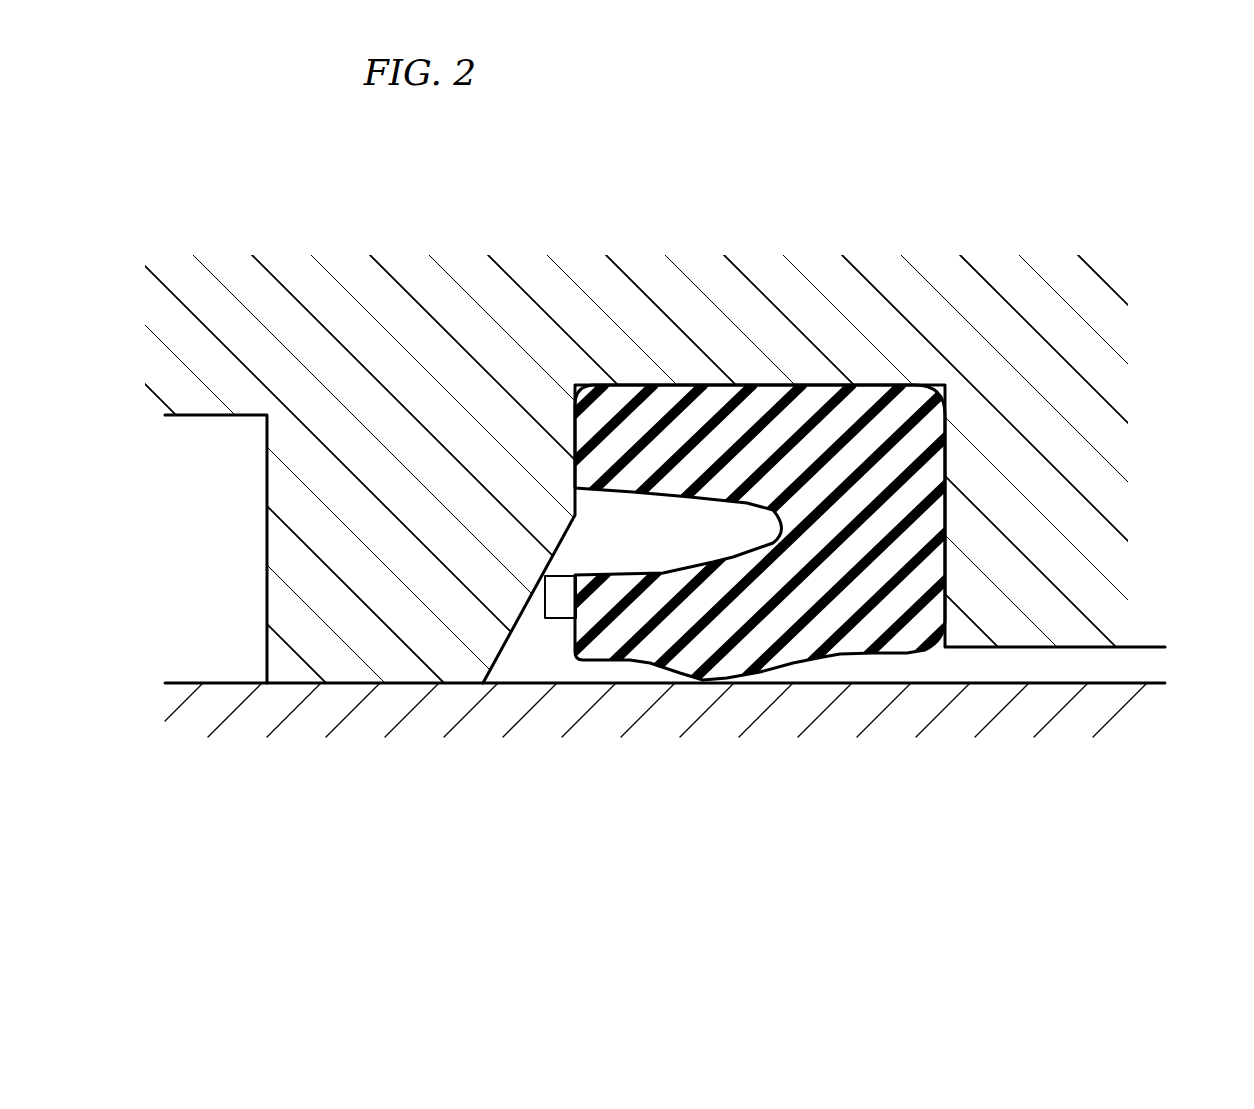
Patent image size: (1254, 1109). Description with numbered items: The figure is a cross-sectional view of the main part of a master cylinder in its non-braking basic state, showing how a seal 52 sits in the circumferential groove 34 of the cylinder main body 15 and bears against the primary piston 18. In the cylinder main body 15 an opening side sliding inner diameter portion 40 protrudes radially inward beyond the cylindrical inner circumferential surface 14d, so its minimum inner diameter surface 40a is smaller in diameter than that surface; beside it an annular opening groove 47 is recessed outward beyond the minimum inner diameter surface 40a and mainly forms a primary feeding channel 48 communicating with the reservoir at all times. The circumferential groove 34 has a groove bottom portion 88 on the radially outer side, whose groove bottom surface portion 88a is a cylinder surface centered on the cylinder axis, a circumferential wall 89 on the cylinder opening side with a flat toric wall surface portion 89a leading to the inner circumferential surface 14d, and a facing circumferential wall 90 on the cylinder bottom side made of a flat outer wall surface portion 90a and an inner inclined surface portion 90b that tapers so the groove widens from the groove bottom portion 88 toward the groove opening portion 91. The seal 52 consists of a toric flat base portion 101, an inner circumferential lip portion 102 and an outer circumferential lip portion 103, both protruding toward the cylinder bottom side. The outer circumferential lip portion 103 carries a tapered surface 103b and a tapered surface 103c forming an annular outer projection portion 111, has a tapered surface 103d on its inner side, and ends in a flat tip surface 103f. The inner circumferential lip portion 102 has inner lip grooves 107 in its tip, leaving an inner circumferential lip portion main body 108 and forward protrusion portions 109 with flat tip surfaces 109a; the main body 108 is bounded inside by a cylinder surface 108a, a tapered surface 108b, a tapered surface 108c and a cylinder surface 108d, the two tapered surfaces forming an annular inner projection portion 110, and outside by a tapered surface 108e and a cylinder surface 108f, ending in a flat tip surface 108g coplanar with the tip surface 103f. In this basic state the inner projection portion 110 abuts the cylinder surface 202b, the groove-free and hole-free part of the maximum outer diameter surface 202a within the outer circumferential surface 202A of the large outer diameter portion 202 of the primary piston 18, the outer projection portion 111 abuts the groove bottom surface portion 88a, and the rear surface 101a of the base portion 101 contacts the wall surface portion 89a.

The cylinder main body 15 is at (802, 288).
The primary piston 18 is at (1045, 670).
The circumferential groove 34 is at (865, 445).
The opening side sliding inner diameter portion 40 is at (303, 657).
The minimum inner diameter surface 40a is at (433, 677).
The opening groove 47 is at (210, 420).
The primary feeding channel 48 is at (240, 655).
The seal 52 is at (797, 378).
The groove bottom portion 88 is at (945, 395).
The groove bottom surface portion 88a is at (841, 400).
The circumferential wall 89 is at (943, 525).
The wall surface portion 89a is at (943, 470).
The circumferential wall 90 is at (595, 447).
The outer wall surface portion 90a is at (578, 425).
The inner inclined surface portion 90b is at (560, 537).
The groove opening portion 91 is at (928, 655).
The base portion 101 is at (800, 640).
The rear surface 101a is at (943, 568).
The inner circumferential lip portion 102 is at (627, 635).
The outer circumferential lip portion 103 is at (598, 440).
The tapered surface 103b is at (743, 385).
The tapered surface 103c is at (603, 385).
The tapered surface 103d is at (943, 592).
The tip surface 103f is at (577, 470).
The inner lip groove 107 is at (555, 598).
The inner circumferential lip portion main body 108 is at (595, 662).
The cylinder surface 108a is at (875, 653).
The tapered surface 108b is at (760, 672).
The tapered surface 108c is at (663, 662).
The cylinder surface 108d is at (593, 662).
The tapered surface 108e is at (750, 555).
The cylinder surface 108f is at (692, 497).
The tip surface 108g is at (577, 633).
The protrusion portion 109 is at (547, 577).
The tip surface 109a is at (550, 600).
The inner projection portion 110 is at (703, 683).
The outer projection portion 111 is at (637, 490).
The large outer diameter portion 202 is at (1006, 683).
The outer circumferential surface 202A is at (407, 680).
The maximum outer diameter surface 202a is at (207, 675).
The cylinder surface 202b is at (1097, 683).
The inner circumferential surface 14d is at (1021, 650).